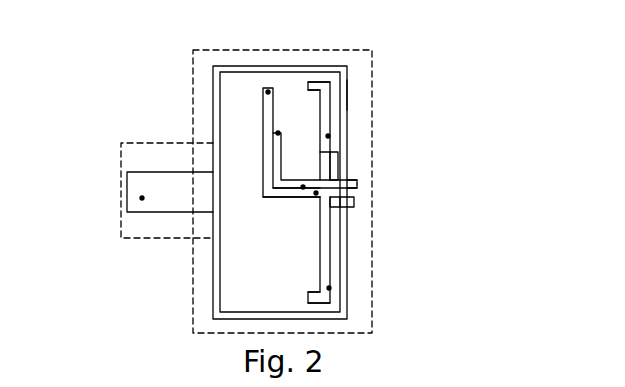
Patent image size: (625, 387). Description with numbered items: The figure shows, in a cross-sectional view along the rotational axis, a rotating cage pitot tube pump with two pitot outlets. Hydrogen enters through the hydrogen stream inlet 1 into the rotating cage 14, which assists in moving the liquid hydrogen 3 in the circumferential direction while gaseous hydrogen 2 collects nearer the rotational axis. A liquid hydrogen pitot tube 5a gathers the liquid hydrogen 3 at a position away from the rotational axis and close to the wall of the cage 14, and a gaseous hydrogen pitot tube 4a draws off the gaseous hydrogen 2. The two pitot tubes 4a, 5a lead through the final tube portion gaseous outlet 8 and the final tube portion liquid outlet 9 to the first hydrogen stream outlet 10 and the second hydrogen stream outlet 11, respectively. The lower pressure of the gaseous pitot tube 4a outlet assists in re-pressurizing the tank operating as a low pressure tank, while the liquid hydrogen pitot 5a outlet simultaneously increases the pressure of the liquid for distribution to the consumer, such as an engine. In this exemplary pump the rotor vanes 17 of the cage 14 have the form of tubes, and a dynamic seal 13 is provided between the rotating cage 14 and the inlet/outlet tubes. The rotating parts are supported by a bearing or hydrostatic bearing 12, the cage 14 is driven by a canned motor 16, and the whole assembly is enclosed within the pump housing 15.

The hydrogen stream inlet 1 is at (358, 195).
The gaseous hydrogen 2 is at (236, 178).
The liquid hydrogen 3 is at (223, 101).
The gaseous hydrogen pitot tube/outlet 4a is at (278, 131).
The liquid hydrogen pitot tube/outlet 5a is at (265, 90).
The final tube portion gaseous outlet 8 is at (304, 186).
The final tube portion liquid outlet 9 is at (317, 194).
The first (gaseous) hydrogen stream outlet 10 is at (357, 178).
The second (liquid) hydrogen stream outlet 11 is at (357, 188).
The bearing or hydrostatic bearing 12 is at (327, 206).
The dynamic seal 13 is at (343, 178).
The cage 14 is at (347, 91).
The pump housing 15 is at (332, 50).
The canned motor 16 is at (142, 198).
The rotor vanes 17 is at (328, 136).